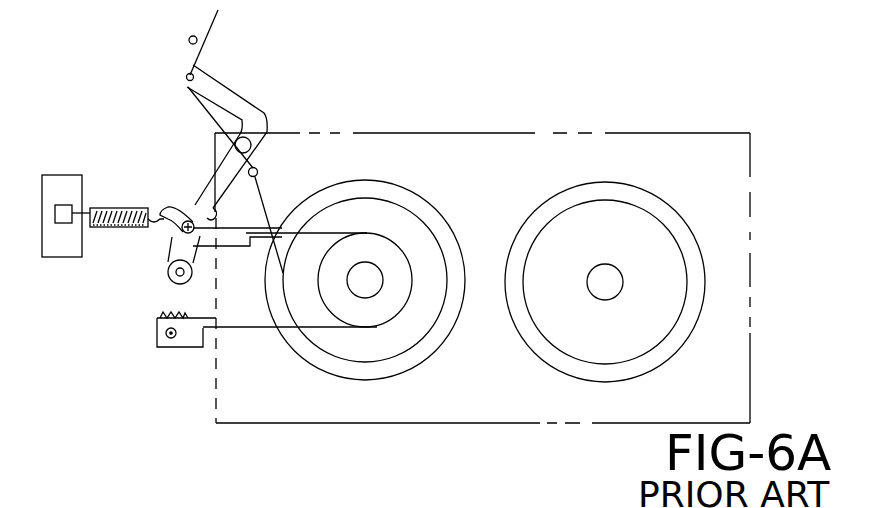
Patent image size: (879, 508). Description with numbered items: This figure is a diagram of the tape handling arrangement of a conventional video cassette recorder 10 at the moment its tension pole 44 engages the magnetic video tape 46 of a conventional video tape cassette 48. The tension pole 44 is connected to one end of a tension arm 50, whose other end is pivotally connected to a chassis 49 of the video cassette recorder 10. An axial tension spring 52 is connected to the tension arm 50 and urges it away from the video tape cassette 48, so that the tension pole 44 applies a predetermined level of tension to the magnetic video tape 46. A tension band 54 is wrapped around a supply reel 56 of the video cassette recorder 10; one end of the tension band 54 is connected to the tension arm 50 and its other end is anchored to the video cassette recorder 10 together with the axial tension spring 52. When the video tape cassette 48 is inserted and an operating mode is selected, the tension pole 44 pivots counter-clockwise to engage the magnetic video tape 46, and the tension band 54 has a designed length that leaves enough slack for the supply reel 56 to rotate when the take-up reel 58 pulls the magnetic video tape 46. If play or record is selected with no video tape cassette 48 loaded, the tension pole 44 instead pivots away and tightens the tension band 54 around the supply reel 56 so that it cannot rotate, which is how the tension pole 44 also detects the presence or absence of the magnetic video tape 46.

The video cassette recorder 10 is at (182, 379).
The tension pole 44 is at (195, 64).
The magnetic video tape 46 is at (197, 102).
The video tape cassette 48 is at (407, 423).
The chassis 49 is at (45, 177).
The tension arm 50 is at (265, 115).
The axial tension spring 52 is at (117, 227).
The tension band 54 is at (323, 233).
The supply reel 56 is at (380, 248).
The take-up reel 58 is at (619, 274).